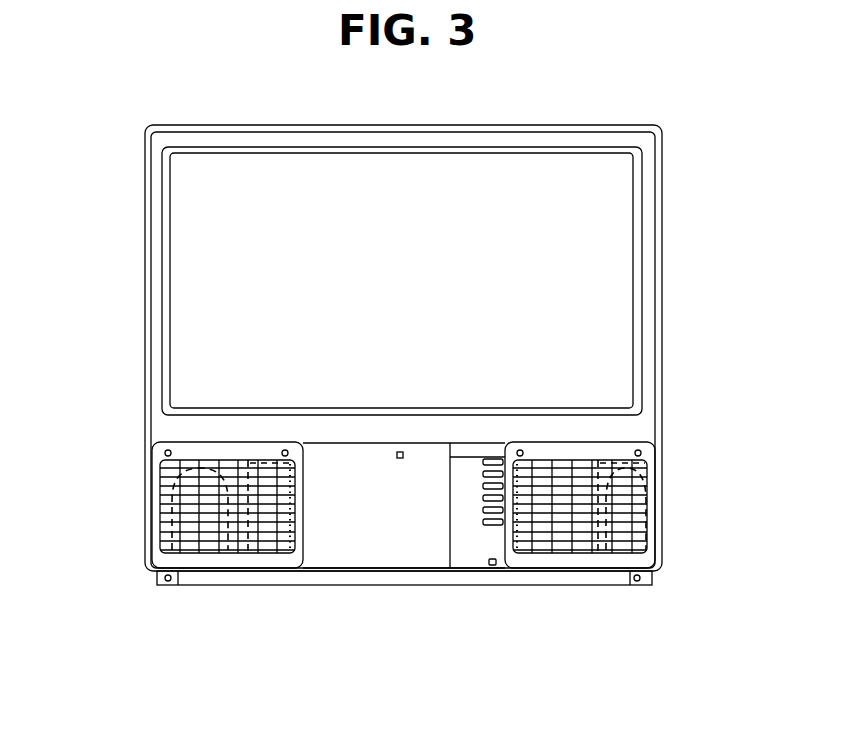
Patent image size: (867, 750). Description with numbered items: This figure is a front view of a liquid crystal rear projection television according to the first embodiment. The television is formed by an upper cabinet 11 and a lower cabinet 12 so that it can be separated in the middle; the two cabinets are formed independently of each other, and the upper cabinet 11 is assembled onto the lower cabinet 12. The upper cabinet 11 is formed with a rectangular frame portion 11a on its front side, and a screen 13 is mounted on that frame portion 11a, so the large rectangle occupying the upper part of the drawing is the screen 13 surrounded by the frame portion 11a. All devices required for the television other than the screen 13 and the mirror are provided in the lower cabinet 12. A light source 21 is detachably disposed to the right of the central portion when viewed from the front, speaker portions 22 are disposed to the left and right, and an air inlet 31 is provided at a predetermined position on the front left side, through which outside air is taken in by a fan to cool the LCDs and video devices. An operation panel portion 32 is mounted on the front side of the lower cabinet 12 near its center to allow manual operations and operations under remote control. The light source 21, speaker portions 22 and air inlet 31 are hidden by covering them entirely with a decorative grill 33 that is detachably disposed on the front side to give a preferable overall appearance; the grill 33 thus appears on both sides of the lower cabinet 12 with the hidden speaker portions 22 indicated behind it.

The upper cabinet 11 is at (689, 194).
The rectangular frame portion 11a is at (145, 264).
The lower cabinet 12 is at (678, 513).
The screen 13 is at (622, 315).
The light source 21 is at (552, 568).
The speaker portion 22 is at (167, 535).
The air inlet 31 is at (255, 578).
The operation panel portion 32 is at (465, 558).
The decorative grill 33 is at (157, 462).